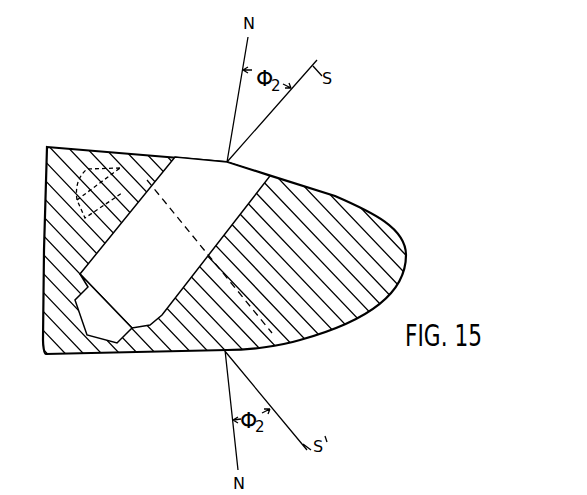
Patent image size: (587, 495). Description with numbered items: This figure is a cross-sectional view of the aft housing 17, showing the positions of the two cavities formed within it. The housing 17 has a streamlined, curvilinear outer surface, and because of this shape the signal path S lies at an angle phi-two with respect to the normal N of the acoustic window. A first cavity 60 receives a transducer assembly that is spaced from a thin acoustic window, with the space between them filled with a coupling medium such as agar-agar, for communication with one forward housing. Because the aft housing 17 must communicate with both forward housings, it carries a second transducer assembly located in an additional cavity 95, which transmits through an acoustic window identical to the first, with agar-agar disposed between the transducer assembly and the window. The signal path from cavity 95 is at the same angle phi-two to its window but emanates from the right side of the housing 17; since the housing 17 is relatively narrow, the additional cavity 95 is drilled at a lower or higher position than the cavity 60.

The aft housing 17 is at (394, 226).
The cavity 60 is at (89, 263).
The cavity 95 is at (253, 310).